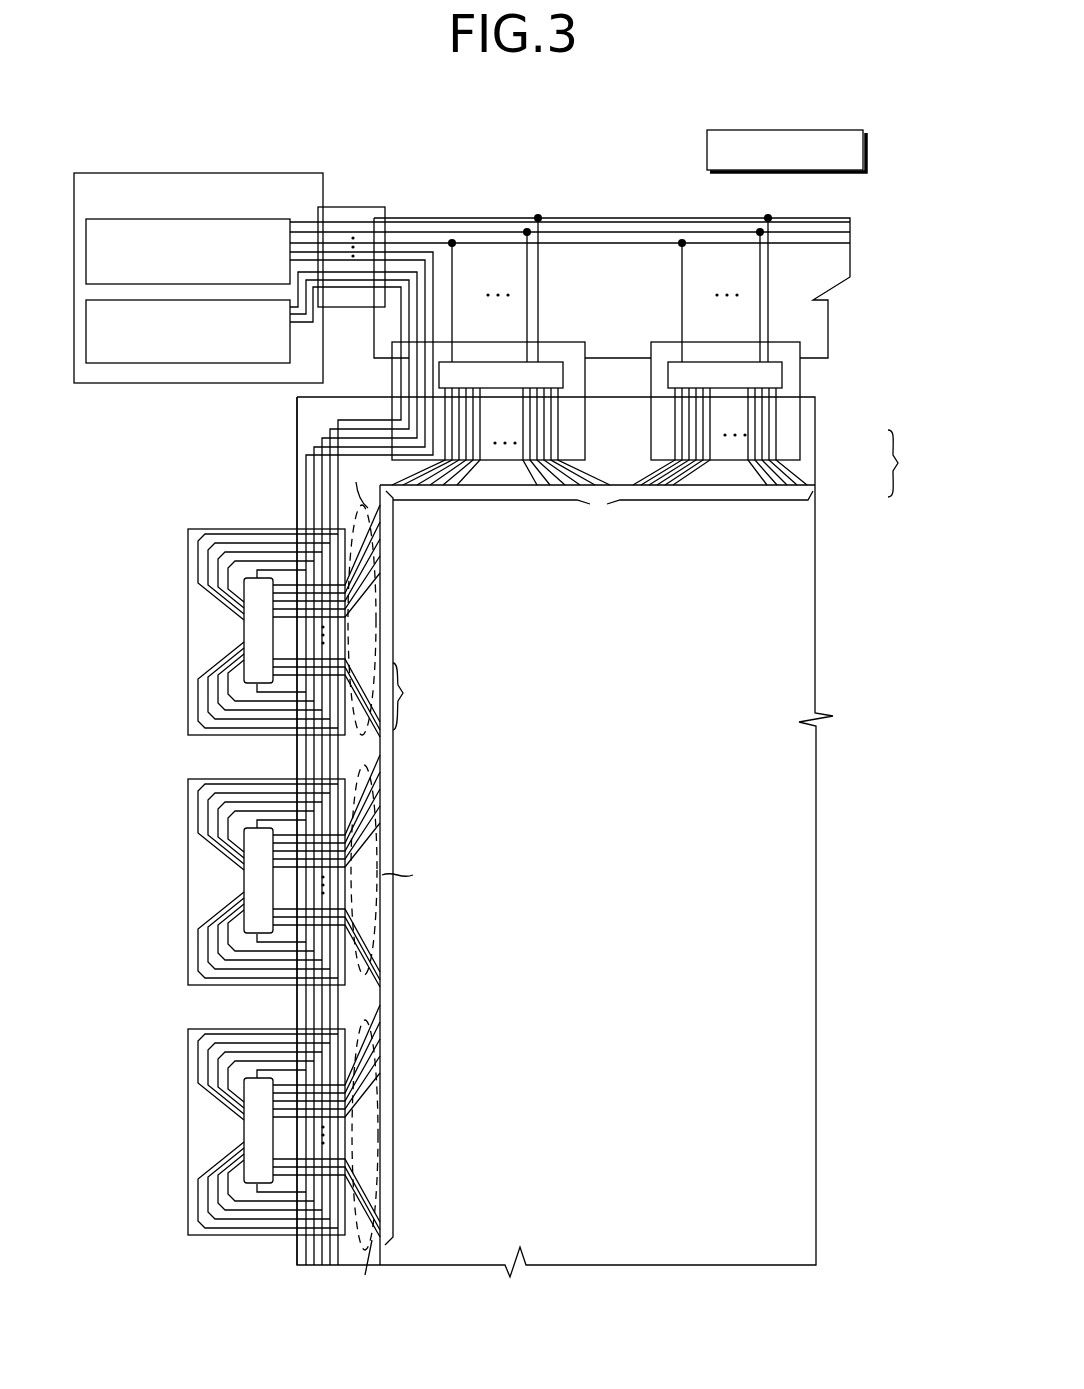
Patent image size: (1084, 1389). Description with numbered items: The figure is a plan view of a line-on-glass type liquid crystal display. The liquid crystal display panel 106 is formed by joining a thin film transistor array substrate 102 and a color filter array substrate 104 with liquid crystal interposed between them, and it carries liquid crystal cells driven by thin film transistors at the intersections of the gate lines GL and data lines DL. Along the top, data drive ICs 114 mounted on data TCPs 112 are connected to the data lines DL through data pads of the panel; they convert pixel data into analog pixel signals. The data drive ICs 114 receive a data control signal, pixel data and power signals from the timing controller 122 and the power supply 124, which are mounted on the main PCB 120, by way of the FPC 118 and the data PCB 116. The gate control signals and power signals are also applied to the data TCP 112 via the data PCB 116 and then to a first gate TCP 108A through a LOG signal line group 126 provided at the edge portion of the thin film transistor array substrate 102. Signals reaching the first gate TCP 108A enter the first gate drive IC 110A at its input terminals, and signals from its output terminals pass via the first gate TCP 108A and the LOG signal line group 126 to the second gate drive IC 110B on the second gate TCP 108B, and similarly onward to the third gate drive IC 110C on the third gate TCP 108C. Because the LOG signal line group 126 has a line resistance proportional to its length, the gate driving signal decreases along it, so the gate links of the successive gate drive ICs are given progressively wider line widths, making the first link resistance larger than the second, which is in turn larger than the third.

The thin film transistor array substrate 102 is at (815, 438).
The color filter array substrate 104 is at (815, 500).
The liquid crystal display panel 106 is at (917, 463).
The first gate TCP 108A is at (252, 528).
The second gate TCP 108B is at (189, 781).
The third gate TCP 108C is at (190, 1031).
The first gate drive IC 110A is at (258, 632).
The second gate drive IC 110B is at (245, 880).
The third gate drive IC 110C is at (246, 1130).
The data TCP 112 is at (800, 361).
The data drive IC 114 is at (782, 382).
The data PCB 116 is at (747, 218).
The FPC 118 is at (385, 208).
The main PCB 120 is at (282, 173).
The timing controller 122 is at (233, 217).
The power supply 124 is at (233, 365).
The LOG signal line group 126 is at (359, 405).